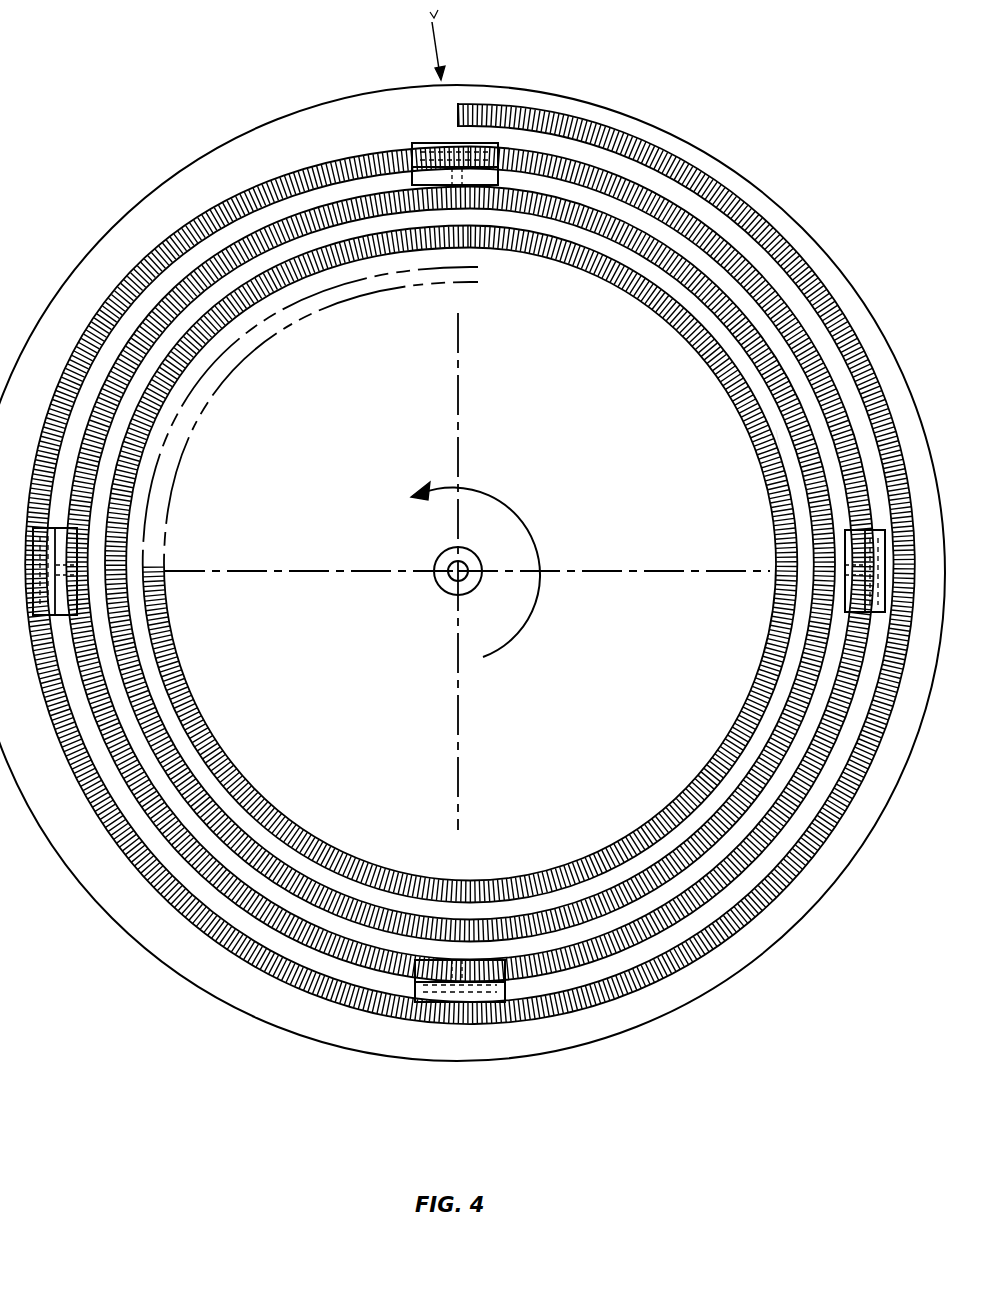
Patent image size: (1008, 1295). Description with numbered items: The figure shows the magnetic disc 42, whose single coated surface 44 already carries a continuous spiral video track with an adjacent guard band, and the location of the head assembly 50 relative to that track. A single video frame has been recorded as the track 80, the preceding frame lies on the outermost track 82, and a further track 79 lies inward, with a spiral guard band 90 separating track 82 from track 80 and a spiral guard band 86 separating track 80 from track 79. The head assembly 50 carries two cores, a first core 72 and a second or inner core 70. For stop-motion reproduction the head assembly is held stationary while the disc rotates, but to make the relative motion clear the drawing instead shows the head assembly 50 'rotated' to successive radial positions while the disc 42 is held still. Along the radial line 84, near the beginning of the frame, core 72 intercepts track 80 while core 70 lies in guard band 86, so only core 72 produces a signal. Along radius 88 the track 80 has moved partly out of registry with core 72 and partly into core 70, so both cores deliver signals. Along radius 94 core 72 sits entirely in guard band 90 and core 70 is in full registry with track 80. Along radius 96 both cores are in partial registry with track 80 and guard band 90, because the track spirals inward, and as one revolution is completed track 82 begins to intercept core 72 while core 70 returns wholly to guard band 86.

The disc 42 is at (323, 99).
The surface 44 is at (378, 668).
The head assembly 50 is at (470, 146).
The core 70 is at (476, 178).
The core 72 is at (428, 146).
The track 79 is at (778, 441).
The track 80 is at (735, 247).
The outermost track 82 is at (628, 139).
The radial line 84 is at (460, 376).
The guard band 86 is at (640, 214).
The radius 88 is at (657, 574).
The guard band 90 is at (868, 353).
The radius 94 is at (460, 714).
The radius 96 is at (318, 571).